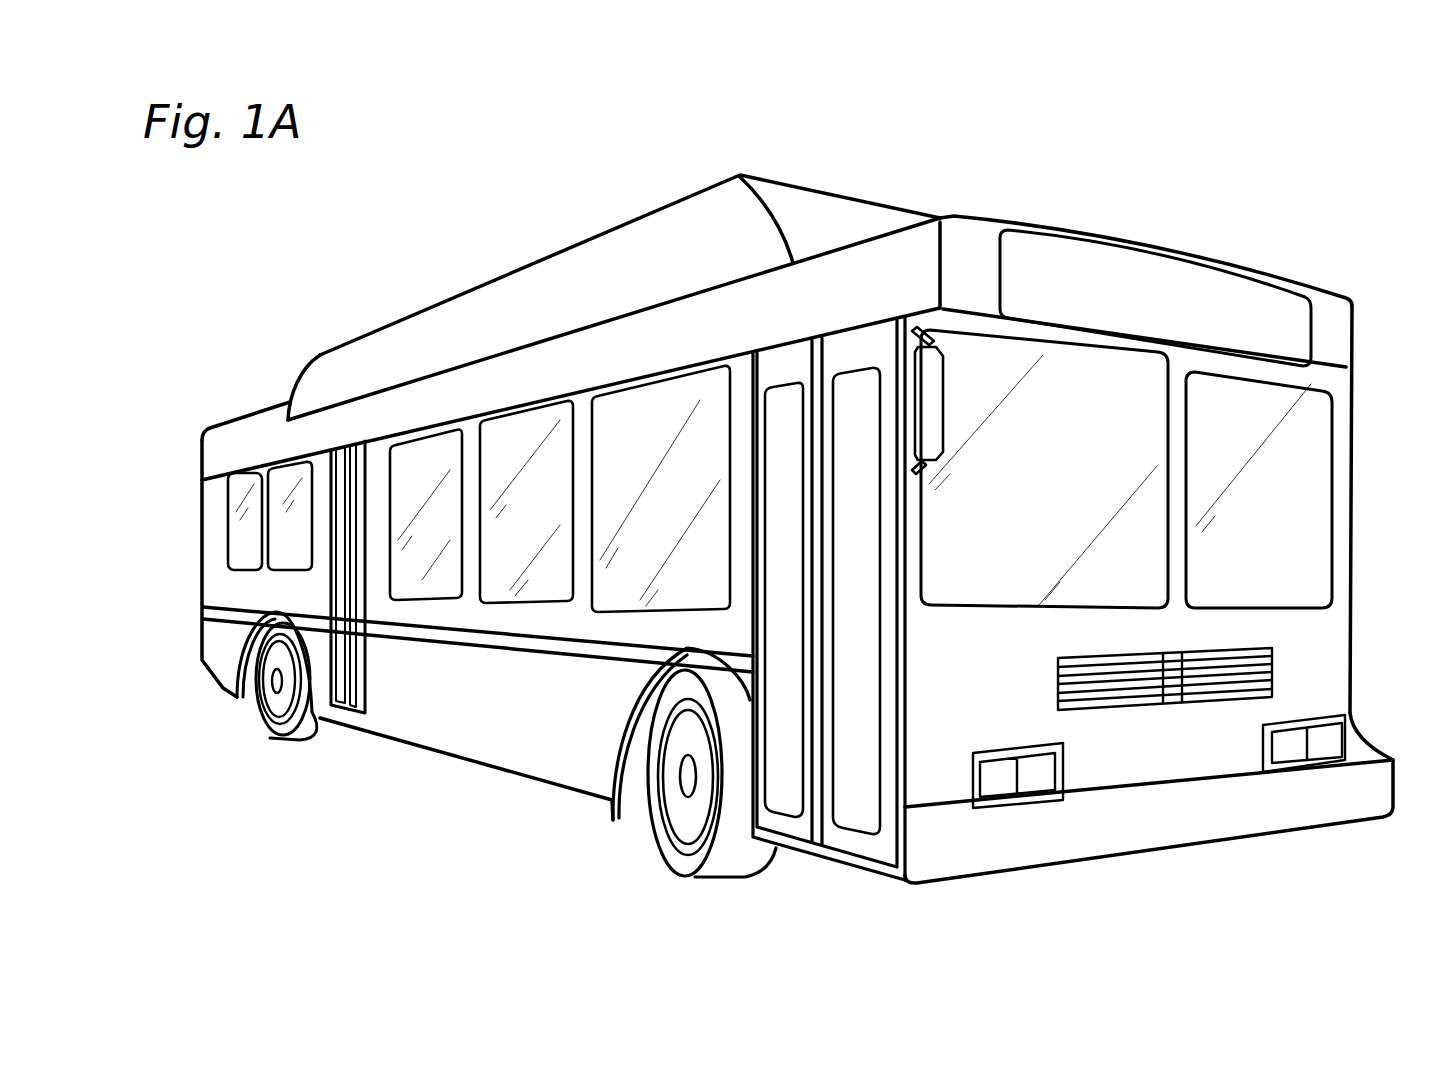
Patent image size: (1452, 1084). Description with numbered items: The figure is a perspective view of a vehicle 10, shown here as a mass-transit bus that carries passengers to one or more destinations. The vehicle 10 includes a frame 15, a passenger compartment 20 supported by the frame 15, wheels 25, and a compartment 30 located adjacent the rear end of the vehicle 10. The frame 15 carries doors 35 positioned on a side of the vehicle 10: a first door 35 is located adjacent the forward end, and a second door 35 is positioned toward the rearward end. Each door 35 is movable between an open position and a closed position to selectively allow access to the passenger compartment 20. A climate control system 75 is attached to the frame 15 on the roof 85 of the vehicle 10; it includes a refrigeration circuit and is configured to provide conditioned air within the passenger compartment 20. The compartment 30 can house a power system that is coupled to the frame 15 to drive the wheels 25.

The vehicle 10 is at (1040, 144).
The frame 15 is at (490, 727).
The passenger compartment 20 is at (1290, 512).
The wheels 25 is at (280, 735).
The compartment 30 is at (212, 548).
The doors 35 is at (337, 473).
The climate control system 75 is at (522, 265).
The roof 85 is at (1195, 247).